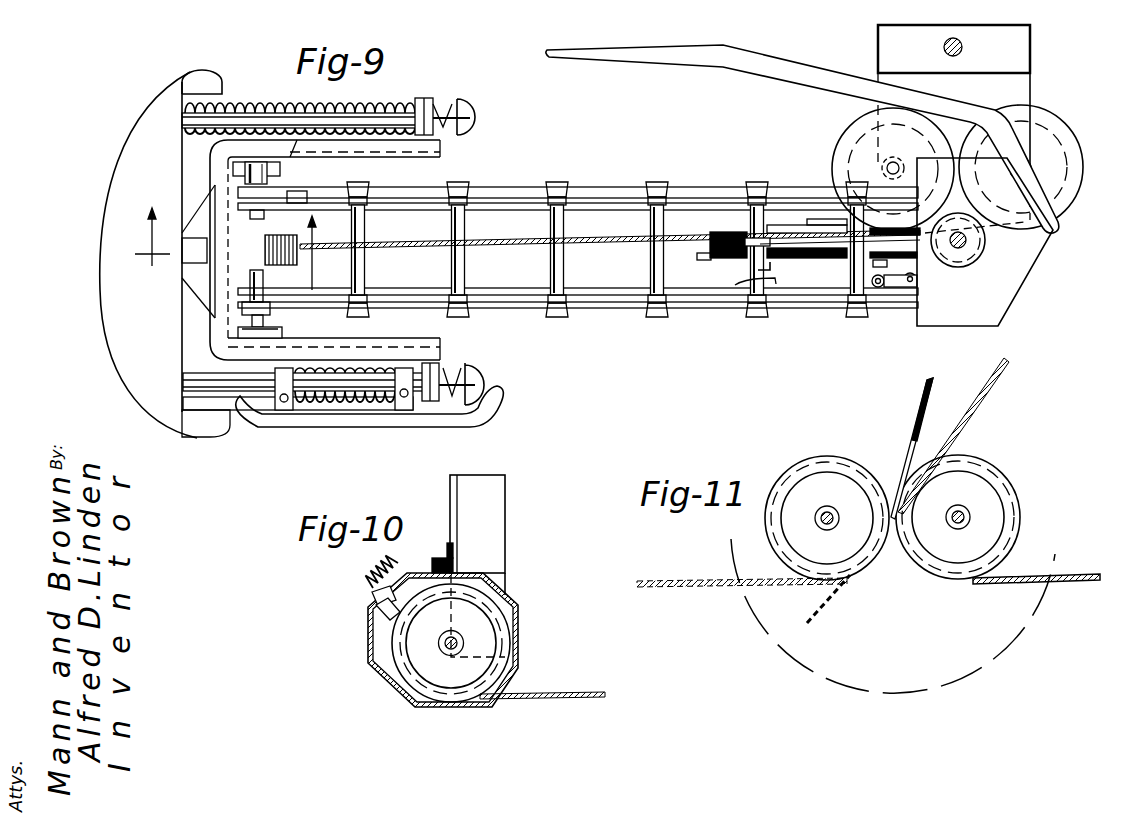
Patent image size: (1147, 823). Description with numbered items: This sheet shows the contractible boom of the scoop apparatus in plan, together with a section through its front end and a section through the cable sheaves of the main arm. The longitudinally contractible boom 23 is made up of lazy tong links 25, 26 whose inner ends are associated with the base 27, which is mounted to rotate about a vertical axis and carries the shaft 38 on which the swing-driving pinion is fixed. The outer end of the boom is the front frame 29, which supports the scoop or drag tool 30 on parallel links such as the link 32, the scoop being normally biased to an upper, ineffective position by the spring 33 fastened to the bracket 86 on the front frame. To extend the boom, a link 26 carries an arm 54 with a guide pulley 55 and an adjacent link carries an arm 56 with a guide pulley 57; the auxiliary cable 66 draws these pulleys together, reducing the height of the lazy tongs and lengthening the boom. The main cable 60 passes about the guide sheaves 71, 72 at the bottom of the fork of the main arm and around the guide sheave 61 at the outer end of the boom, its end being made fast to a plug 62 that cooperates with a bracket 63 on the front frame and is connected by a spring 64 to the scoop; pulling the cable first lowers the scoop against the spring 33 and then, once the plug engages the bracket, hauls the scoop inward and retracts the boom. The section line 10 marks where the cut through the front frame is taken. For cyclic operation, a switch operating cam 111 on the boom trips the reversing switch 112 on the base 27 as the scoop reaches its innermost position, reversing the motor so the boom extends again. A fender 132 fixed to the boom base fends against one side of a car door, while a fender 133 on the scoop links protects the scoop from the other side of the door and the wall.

In FIG. 9, the section line 10 is at (231, 249).
In FIG. 9, the longitudinally contractible boom 23 is at (603, 184).
In FIG. 9, the lazy tong links 25 is at (717, 166).
In FIG. 9, the lazy tong links 26 is at (598, 207).
In FIG. 9, the base 27 is at (1008, 296).
In FIG. 9, the front frame 29 is at (280, 172).
In FIG. 10, the front frame 29 is at (506, 524).
In FIG. 9, the scoop or drag tool 30 is at (122, 343).
In FIG. 9, the parallel link 32 is at (266, 109).
In FIG. 9, the biasing spring 33 is at (337, 109).
In FIG. 9, the shaft 38 is at (968, 244).
In FIG. 9, the arm 54 is at (708, 262).
In FIG. 9, the guide pulley 55 is at (708, 243).
In FIG. 9, the arm 56 is at (834, 262).
In FIG. 9, the guide pulley 57 is at (933, 270).
In FIG. 9, the main cable 60 is at (494, 247).
In FIG. 10, the main cable 60 is at (571, 680).
In FIG. 11, the main cable 60 is at (973, 414).
In FIG. 9, the guide sheave 61 is at (296, 240).
In FIG. 10, the guide sheave 61 is at (500, 667).
In FIG. 10, the plug 62 is at (380, 617).
In FIG. 10, the bracket 63 is at (372, 603).
In FIG. 10, the spring 64 is at (366, 568).
In FIG. 9, the auxiliary cable 66 is at (772, 258).
In FIG. 11, the auxiliary cable 66 is at (929, 394).
In FIG. 9, the guide sheave 71 is at (852, 133).
In FIG. 11, the guide sheave 71 is at (838, 464).
In FIG. 9, the guide sheave 72 is at (1046, 118).
In FIG. 11, the guide sheave 72 is at (990, 466).
In FIG. 9, the bracket 86 is at (384, 148).
In FIG. 9, the switch operating cam 111 is at (735, 285).
In FIG. 9, the limit switch or reversing switch 112 is at (917, 285).
In FIG. 9, the fender 132 is at (779, 66).
In FIG. 9, the fender 133 is at (302, 420).